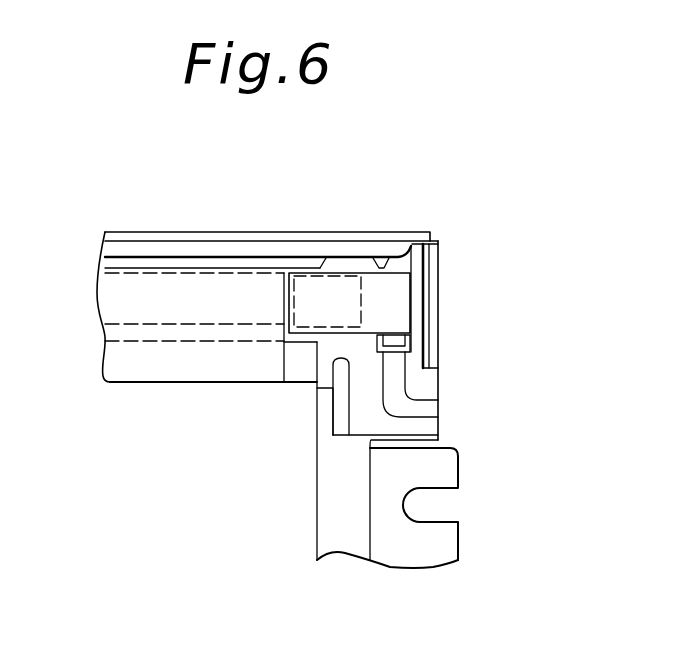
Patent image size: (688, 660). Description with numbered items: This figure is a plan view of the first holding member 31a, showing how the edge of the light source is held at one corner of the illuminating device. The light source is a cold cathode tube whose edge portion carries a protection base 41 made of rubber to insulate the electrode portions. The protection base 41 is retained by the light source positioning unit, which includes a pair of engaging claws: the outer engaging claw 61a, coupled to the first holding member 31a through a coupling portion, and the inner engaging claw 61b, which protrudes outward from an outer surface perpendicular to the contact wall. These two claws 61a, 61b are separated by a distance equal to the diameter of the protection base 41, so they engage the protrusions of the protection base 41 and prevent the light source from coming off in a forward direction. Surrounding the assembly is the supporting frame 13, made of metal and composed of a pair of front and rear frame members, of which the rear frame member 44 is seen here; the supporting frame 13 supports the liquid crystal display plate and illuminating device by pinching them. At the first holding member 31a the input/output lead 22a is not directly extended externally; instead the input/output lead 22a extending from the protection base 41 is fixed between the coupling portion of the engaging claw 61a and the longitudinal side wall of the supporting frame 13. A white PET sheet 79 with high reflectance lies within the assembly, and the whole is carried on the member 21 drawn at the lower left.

The base member 21 is at (220, 418).
The white PET sheet 79 is at (162, 287).
The rear frame member 44 is at (175, 230).
The input/output lead 22a is at (228, 250).
The outer engaging claw 61a is at (347, 267).
The supporting frame 13 is at (438, 263).
The protection base 41 is at (392, 308).
The first holding member 31a is at (433, 425).
The inner engaging claw 61b is at (342, 342).